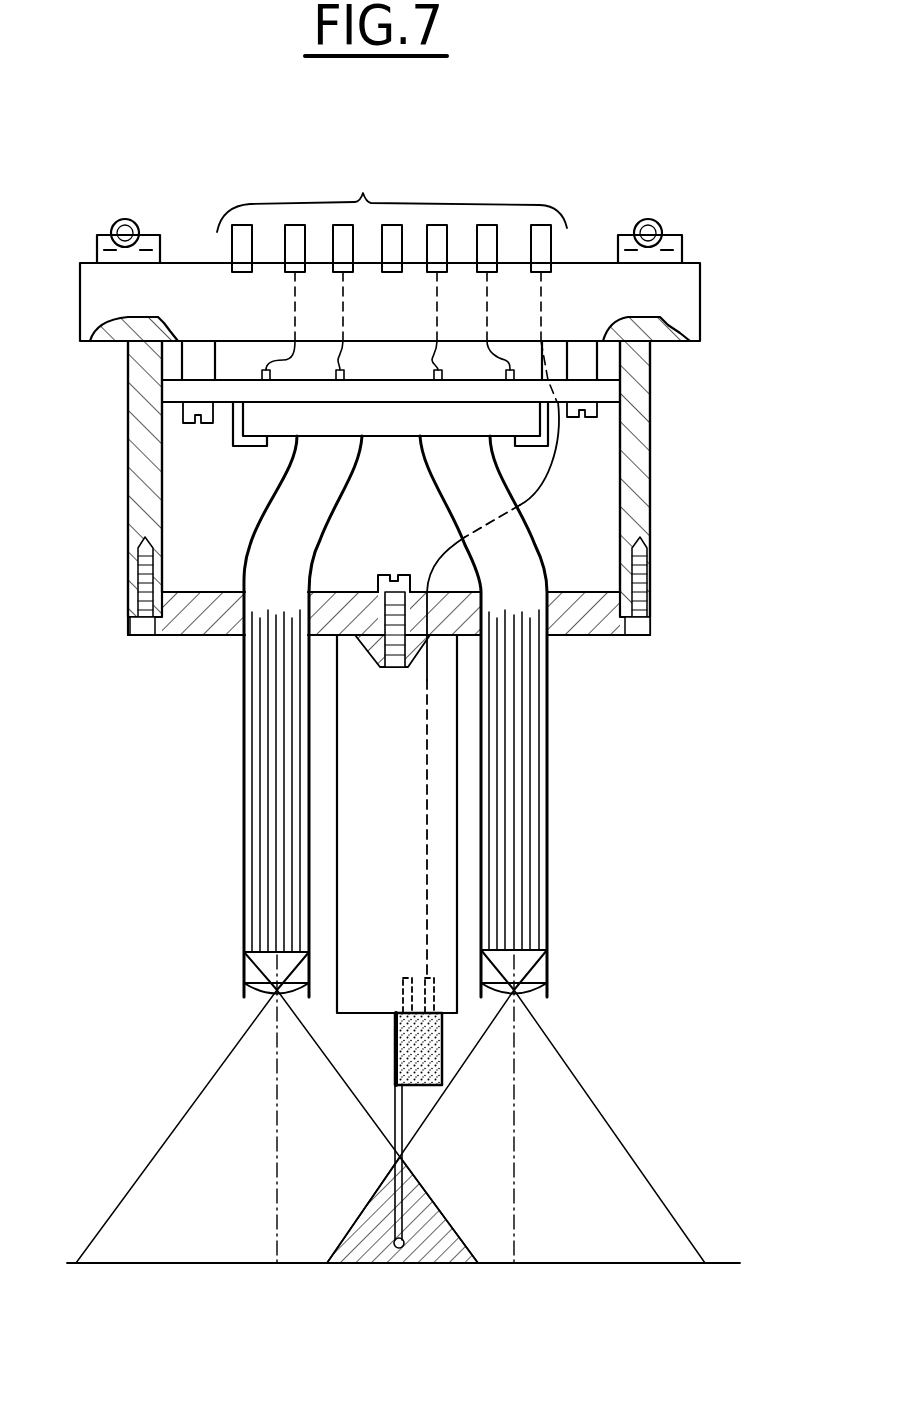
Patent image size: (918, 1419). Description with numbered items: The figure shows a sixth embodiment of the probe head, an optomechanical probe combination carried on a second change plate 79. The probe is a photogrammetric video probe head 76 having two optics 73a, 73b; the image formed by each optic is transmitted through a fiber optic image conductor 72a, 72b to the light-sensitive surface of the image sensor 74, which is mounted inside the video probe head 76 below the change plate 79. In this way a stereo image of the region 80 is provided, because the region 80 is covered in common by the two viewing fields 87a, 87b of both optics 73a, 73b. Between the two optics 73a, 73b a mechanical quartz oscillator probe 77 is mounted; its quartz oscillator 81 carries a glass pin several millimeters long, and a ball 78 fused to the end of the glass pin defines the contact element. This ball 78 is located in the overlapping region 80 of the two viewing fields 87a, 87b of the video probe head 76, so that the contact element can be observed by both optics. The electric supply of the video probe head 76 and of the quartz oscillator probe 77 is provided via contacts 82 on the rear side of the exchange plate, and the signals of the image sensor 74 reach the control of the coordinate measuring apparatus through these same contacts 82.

The second change plate 79 is at (683, 293).
The contacts 82 is at (392, 280).
The video probe head 76 is at (637, 460).
The image sensor 74 is at (283, 437).
The fiber optic image conductor 72a is at (527, 765).
The fiber optic image conductor 72b is at (272, 847).
The optic 73a is at (535, 980).
The optic 73b is at (250, 978).
The mechanical quartz oscillator probe 77 is at (350, 745).
The quartz oscillator 81 is at (430, 1057).
The ball 78 is at (400, 1237).
The region 80 is at (438, 1257).
The viewing field 87a is at (622, 1133).
The viewing field 87b is at (192, 1113).